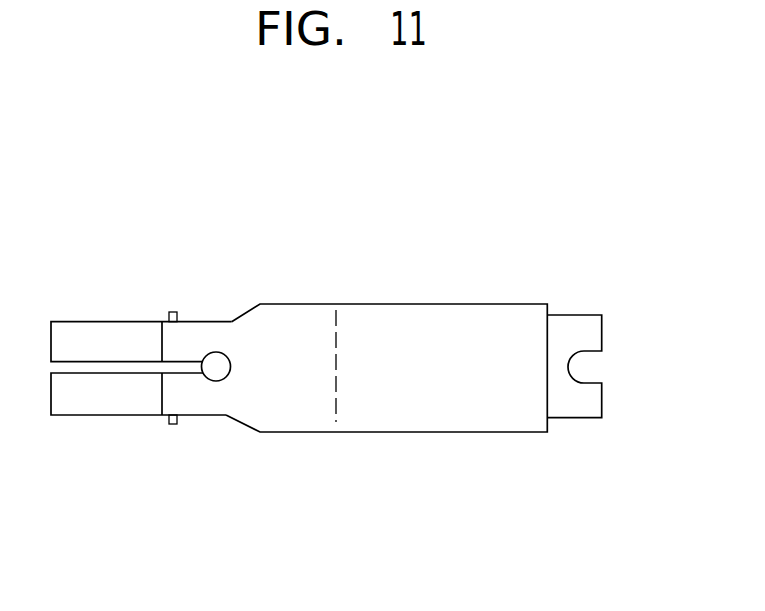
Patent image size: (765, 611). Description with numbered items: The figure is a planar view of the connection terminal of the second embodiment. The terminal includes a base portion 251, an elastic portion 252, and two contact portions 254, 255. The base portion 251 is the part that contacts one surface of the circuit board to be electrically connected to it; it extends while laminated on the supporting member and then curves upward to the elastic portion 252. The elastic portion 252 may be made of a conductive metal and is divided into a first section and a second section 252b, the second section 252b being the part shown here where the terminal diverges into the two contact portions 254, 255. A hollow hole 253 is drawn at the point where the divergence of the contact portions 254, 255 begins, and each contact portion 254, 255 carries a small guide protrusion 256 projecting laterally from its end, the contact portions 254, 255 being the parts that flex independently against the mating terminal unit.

The base portion 251 is at (574, 323).
The elastic portion 252 is at (423, 229).
The second section 252b is at (303, 320).
The hinge pin 253 is at (228, 361).
The contact portion 254 is at (132, 405).
The contact portion 255 is at (132, 330).
The protrusion 256 is at (174, 312).